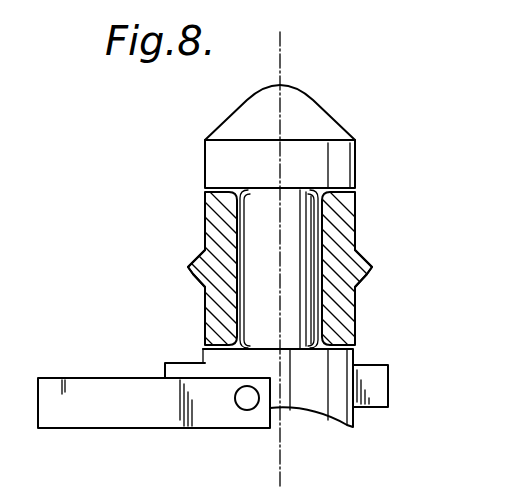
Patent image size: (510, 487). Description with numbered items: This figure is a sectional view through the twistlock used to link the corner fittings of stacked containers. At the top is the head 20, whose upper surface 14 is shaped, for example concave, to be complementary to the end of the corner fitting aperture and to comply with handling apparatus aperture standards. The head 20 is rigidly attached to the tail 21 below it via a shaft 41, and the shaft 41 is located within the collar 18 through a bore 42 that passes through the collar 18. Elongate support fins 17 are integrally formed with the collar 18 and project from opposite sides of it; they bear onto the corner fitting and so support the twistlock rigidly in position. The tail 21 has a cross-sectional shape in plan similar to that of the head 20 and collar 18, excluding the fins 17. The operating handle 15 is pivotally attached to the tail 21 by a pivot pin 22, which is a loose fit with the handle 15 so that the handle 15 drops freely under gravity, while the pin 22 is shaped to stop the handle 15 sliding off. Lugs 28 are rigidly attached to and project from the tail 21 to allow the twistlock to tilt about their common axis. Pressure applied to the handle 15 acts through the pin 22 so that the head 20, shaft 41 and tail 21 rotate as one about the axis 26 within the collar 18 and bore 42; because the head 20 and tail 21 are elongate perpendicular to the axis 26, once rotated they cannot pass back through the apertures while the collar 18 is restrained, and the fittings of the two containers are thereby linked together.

The surface 14 is at (313, 418).
The operating handle 15 is at (77, 398).
The support fins 17 is at (200, 272).
The collar 18 is at (217, 222).
The head 20 is at (337, 152).
The tail 21 is at (337, 363).
The pivot pin 22 is at (247, 408).
The axis 26 is at (284, 62).
The lugs 28 is at (378, 385).
The shaft 41 is at (300, 232).
The bore 42 is at (352, 292).